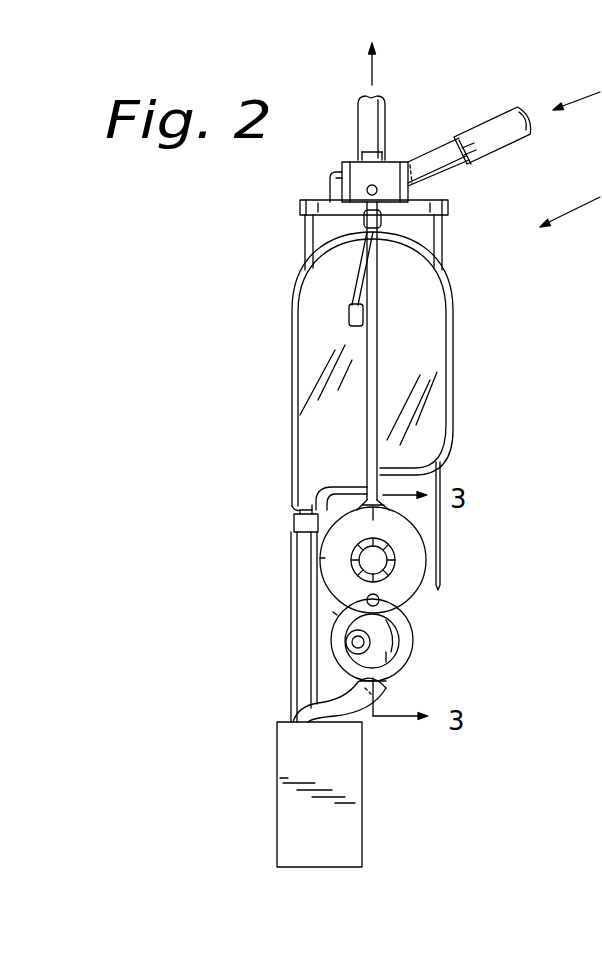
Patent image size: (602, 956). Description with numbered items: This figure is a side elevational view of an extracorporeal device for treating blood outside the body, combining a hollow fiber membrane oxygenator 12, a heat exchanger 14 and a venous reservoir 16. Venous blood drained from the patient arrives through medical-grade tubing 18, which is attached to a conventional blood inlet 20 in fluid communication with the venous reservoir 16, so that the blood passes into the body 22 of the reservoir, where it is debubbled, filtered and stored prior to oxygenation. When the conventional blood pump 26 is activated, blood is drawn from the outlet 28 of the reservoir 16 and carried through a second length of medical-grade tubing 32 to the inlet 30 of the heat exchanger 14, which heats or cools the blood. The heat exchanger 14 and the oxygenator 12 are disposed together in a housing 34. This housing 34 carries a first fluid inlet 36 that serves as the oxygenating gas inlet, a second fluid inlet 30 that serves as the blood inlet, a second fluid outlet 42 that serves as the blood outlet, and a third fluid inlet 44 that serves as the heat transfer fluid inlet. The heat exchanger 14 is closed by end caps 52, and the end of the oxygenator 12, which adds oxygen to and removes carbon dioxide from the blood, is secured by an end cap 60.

The hollow fiber membrane oxygenator 12 is at (446, 535).
The heat exchanger 14 is at (430, 641).
The venous reservoir 16 is at (452, 240).
The medical-grade tubing 18 is at (513, 148).
The blood inlet 20 is at (435, 179).
The body 22 is at (453, 362).
The blood pump 26 is at (363, 837).
The outlet 28 is at (294, 523).
The inlet 30 is at (393, 682).
The medical-grade tubing 32 is at (292, 706).
The housing 34 is at (337, 615).
The first fluid inlet 36 is at (380, 603).
The second fluid outlet 42 is at (354, 486).
The third fluid inlet 44 is at (386, 657).
The end caps 52 is at (418, 662).
The end cap 60 is at (418, 563).